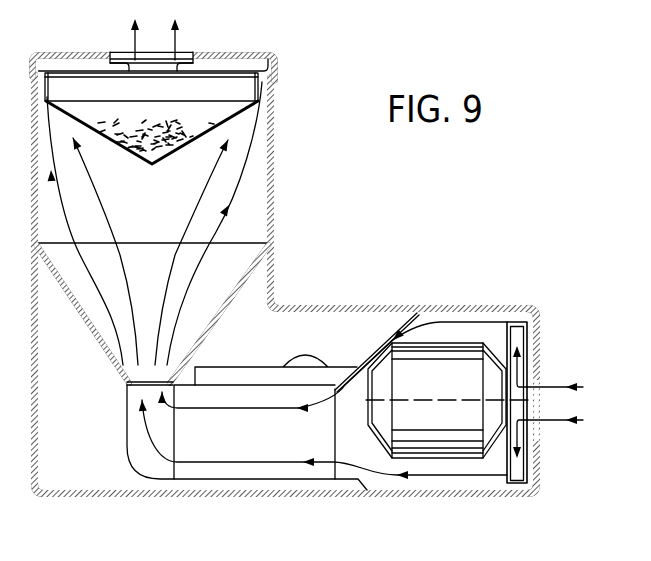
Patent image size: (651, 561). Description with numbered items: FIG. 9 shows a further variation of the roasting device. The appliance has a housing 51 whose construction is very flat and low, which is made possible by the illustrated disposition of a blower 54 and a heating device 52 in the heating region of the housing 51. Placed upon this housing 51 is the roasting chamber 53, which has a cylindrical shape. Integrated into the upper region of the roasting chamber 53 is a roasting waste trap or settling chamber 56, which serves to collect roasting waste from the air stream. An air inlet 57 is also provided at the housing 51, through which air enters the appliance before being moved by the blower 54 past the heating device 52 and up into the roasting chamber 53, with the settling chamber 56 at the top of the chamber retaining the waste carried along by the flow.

The housing 51 is at (503, 497).
The heating device 52 is at (230, 473).
The roasting chamber 53 is at (253, 187).
The blower 54 is at (425, 447).
The roasting waste trap or settling chamber 56 is at (235, 112).
The air inlet 57 is at (539, 435).